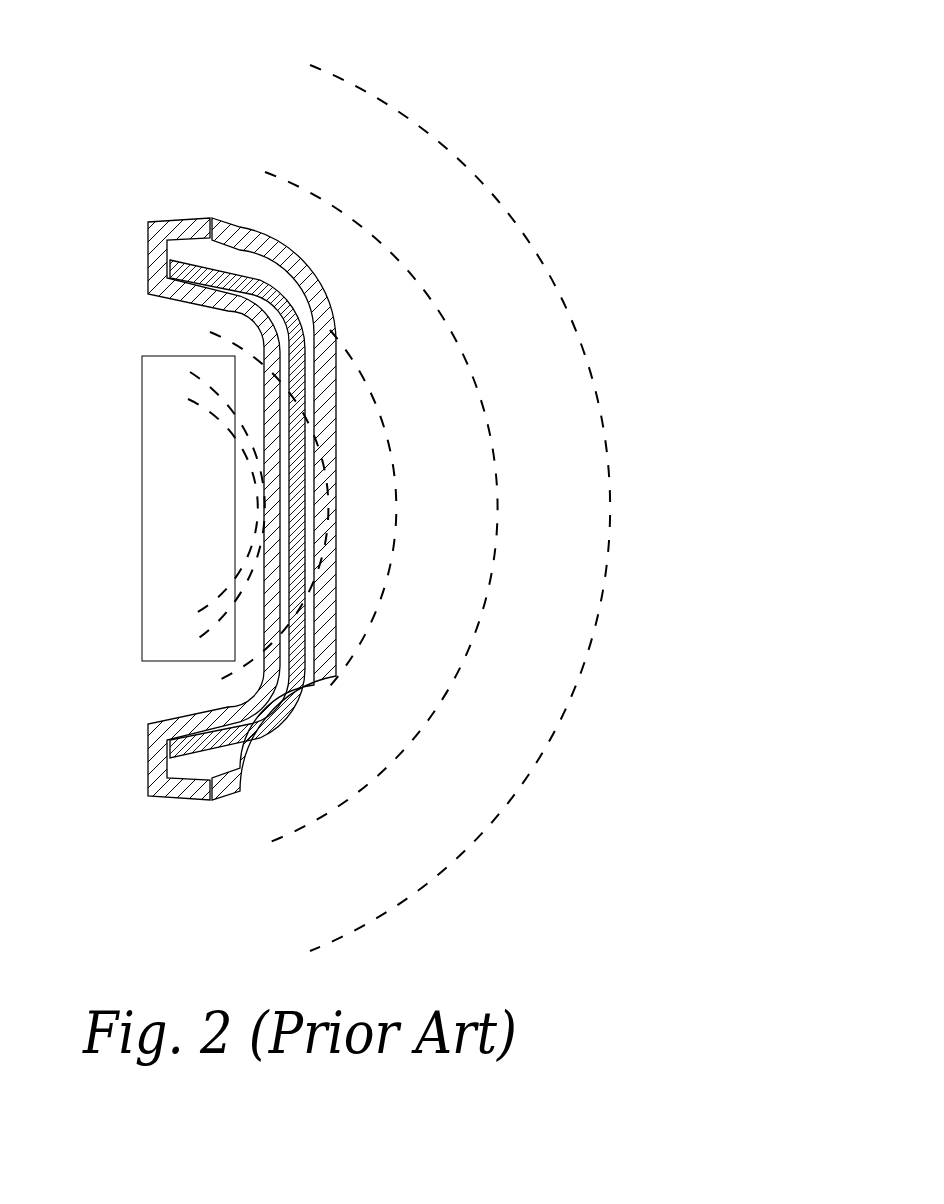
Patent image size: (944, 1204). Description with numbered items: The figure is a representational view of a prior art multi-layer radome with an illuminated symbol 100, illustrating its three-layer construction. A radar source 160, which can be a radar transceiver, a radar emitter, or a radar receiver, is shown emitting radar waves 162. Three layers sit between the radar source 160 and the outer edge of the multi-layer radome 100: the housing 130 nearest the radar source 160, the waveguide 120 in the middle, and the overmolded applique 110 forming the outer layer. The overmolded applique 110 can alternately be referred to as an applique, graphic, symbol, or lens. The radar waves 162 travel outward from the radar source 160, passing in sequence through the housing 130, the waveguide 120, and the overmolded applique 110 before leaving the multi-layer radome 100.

The multi-layer radome with an illuminated symbol 100 is at (117, 110).
The overmolded applique 110 is at (283, 770).
The waveguide 120 is at (205, 268).
The housing 130 is at (150, 262).
The radar source 160 is at (173, 513).
The radar waves 162 is at (553, 735).